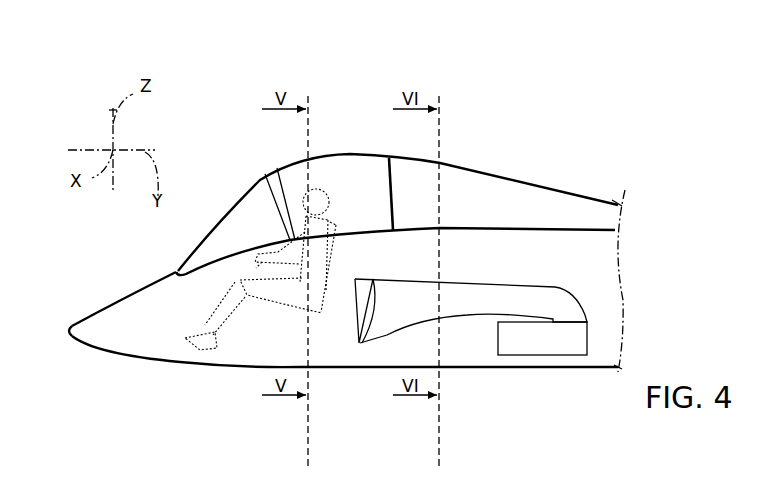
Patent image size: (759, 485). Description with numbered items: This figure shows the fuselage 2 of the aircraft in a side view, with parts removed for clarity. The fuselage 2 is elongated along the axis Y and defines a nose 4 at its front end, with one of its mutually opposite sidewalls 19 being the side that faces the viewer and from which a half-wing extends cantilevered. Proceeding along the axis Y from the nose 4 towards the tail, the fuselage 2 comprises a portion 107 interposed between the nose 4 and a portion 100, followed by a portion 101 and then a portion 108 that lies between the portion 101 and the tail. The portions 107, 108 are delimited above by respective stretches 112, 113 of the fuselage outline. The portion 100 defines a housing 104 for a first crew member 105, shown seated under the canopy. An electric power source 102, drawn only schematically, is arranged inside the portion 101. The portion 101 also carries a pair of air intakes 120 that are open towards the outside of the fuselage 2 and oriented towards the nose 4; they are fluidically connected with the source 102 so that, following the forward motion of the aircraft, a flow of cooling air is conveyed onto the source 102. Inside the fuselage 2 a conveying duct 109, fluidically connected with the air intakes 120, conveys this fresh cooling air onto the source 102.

The fuselage 2 is at (355, 236).
The nose 4 is at (70, 340).
The sidewall 19 is at (600, 309).
The portion 100 is at (284, 228).
The portion 101 is at (493, 155).
The electric power source 102 is at (531, 341).
The housing 104 is at (364, 161).
The first crew member 105 is at (332, 213).
The portion 107 is at (176, 251).
The portion 108 is at (540, 178).
The conveying duct 109 is at (463, 328).
The stretch 112 is at (128, 294).
The stretch 113 is at (562, 187).
The air intake 120 is at (365, 306).